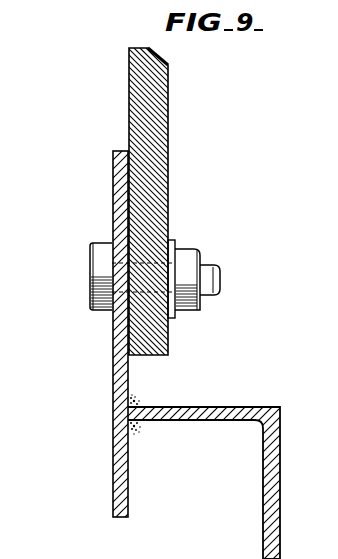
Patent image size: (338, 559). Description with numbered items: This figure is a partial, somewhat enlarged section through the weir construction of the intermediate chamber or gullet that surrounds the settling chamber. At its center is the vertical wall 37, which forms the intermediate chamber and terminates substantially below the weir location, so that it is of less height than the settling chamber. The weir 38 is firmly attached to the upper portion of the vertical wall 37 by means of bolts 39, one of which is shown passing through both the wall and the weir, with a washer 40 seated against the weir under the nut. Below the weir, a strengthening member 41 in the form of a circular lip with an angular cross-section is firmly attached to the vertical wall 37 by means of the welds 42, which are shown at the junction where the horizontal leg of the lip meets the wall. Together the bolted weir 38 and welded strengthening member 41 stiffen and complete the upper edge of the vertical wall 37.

The vertical wall 37 is at (112, 206).
The weir 38 is at (166, 98).
The bolts 39 is at (93, 268).
The washer 40 is at (176, 239).
The strengthening member 41 is at (233, 407).
The welds 42 is at (140, 430).